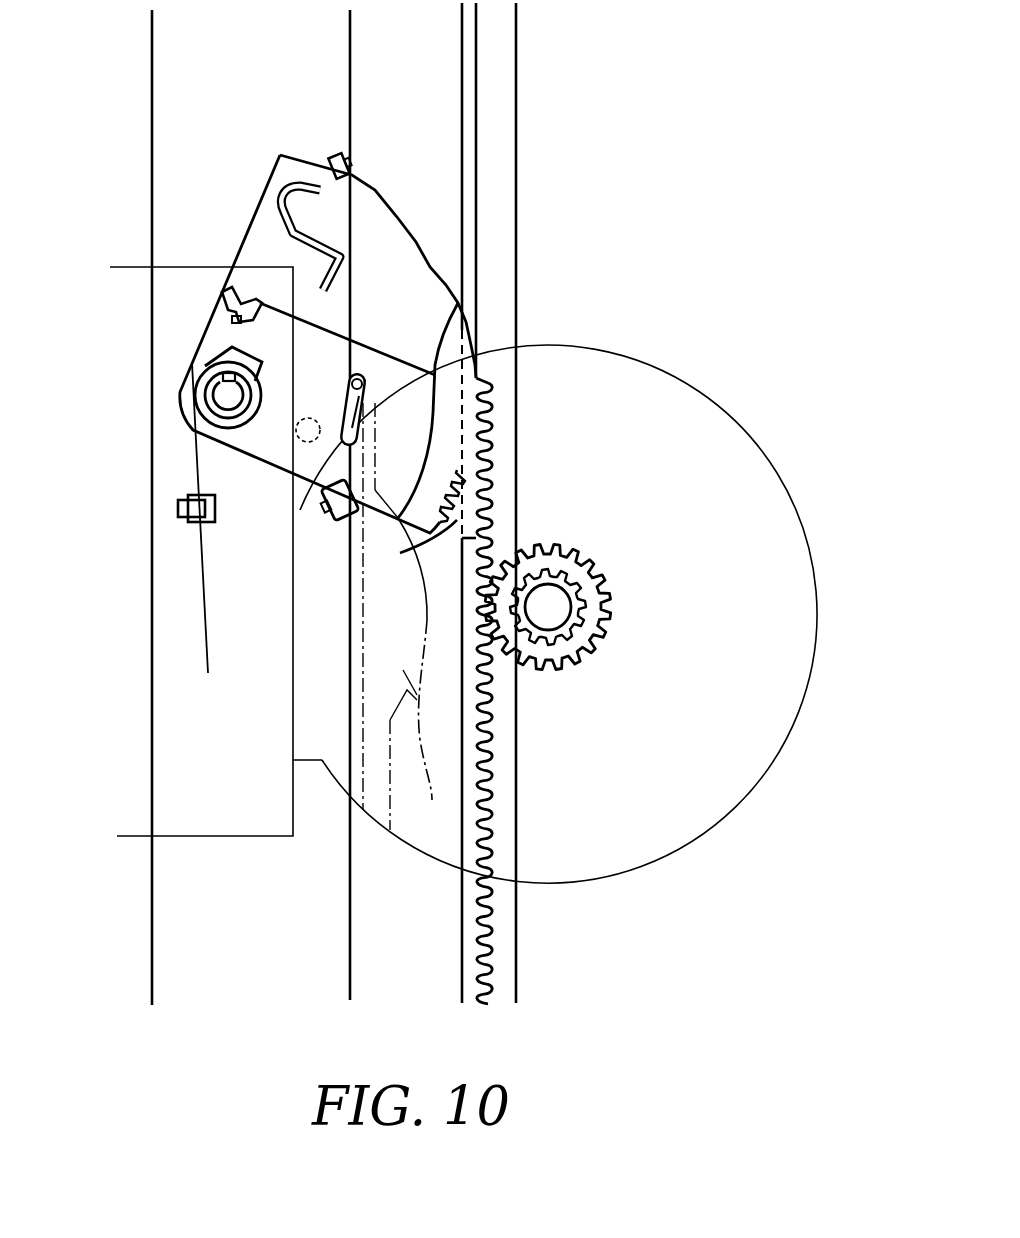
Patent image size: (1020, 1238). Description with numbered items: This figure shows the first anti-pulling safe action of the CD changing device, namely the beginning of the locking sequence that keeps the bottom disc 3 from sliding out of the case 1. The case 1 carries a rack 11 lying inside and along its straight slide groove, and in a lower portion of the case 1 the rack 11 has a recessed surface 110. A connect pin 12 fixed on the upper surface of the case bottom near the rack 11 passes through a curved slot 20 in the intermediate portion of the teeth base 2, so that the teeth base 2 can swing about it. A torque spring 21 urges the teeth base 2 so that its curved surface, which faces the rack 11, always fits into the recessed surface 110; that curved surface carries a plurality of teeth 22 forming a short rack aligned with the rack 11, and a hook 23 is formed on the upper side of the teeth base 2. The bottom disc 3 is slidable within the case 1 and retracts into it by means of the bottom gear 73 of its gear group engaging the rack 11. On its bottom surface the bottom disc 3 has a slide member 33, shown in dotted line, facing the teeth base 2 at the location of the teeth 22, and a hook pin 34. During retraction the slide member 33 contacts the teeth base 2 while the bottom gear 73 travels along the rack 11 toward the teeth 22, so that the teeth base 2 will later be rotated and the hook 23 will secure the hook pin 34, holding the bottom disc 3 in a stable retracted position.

The case 1 is at (445, 93).
The teeth base 2 is at (255, 245).
The bottom disc 3 is at (245, 836).
The rack 11 is at (490, 898).
The connect pin 12 is at (357, 382).
The curved slot 20 is at (345, 440).
The torque spring 21 is at (203, 613).
The teeth 22 is at (400, 553).
The hook 23 is at (283, 207).
The slide member 33 is at (432, 800).
The hook pin 34 is at (296, 432).
The bottom gear 73 is at (578, 607).
The recessed surface 110 is at (490, 503).